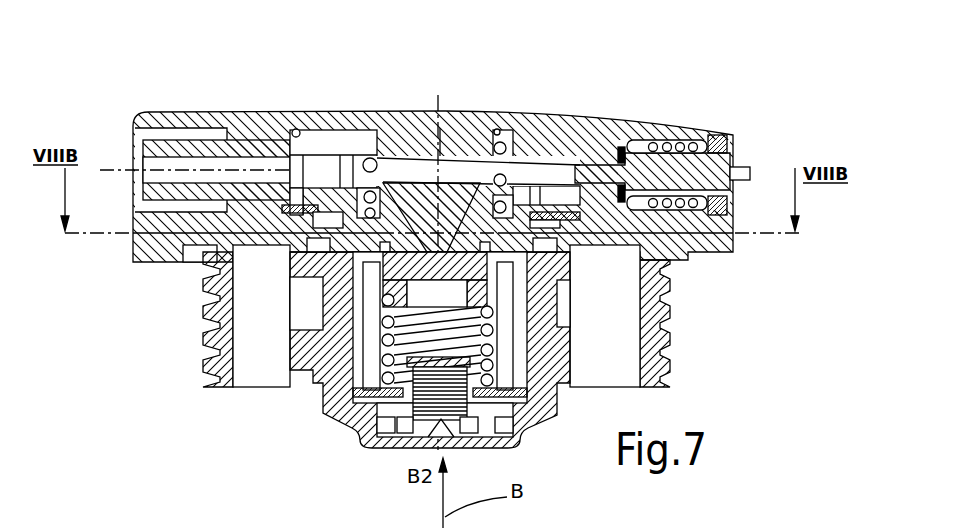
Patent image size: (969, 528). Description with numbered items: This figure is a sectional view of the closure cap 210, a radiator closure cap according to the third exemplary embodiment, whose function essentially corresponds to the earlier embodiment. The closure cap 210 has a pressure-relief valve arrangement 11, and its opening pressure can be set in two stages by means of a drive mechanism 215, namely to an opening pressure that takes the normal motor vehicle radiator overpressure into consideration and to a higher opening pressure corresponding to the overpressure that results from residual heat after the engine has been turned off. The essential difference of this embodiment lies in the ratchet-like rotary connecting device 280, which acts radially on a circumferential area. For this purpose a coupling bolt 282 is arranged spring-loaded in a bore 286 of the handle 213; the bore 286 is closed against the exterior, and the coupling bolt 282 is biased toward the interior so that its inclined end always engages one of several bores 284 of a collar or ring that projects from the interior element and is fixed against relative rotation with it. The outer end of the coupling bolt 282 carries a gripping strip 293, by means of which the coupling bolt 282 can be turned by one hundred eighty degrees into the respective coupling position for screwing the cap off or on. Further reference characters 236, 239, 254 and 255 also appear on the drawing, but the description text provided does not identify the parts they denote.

The pressure-relief valve arrangement 11 is at (350, 431).
The closure cap 210 is at (488, 231).
The handle 213 is at (350, 101).
The drive mechanism 215 is at (553, 130).
The spring 236 is at (472, 117).
The sealing ring 239 is at (300, 112).
The valve lever 254 is at (380, 116).
The seal 255 is at (283, 203).
The ratchet-like rotary connecting device 280 is at (721, 115).
The coupling bolt 282 is at (710, 130).
The bore 284 is at (595, 117).
The bore 286 is at (653, 133).
The gripping strip 293 is at (750, 173).